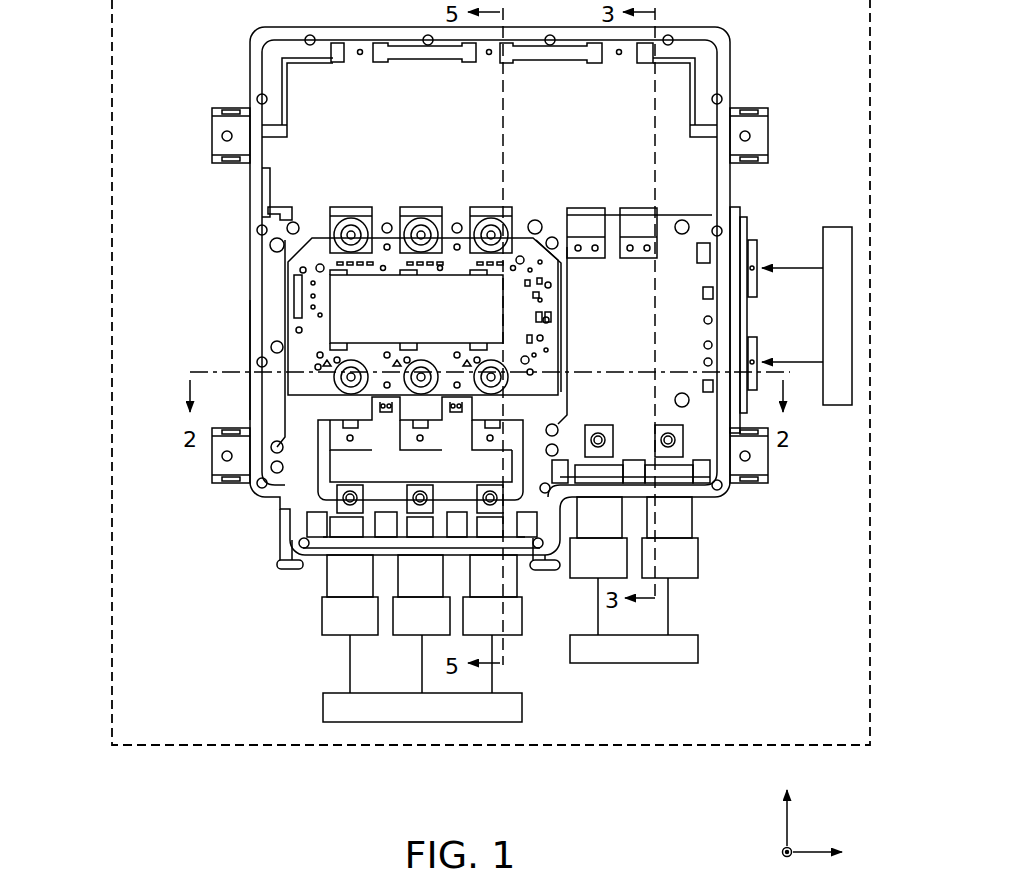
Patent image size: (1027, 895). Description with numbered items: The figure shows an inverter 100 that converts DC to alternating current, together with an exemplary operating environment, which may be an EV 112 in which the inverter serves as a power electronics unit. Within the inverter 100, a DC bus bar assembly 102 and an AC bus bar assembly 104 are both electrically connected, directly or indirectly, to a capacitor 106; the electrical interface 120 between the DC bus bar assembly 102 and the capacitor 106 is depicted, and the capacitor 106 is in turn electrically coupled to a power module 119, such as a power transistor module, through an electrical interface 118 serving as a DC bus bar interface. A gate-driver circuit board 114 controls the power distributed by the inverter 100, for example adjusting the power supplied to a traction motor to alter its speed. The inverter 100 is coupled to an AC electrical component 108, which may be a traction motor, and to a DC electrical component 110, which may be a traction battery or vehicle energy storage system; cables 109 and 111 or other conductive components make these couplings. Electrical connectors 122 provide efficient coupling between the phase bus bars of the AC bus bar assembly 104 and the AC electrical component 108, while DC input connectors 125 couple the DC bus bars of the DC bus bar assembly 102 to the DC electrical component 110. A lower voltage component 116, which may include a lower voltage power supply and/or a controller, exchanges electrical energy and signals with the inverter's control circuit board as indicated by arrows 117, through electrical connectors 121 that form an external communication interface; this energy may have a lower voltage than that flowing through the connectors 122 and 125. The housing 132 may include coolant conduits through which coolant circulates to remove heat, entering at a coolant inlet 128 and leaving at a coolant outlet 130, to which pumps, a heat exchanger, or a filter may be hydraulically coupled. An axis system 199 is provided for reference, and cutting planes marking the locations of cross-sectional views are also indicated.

The inverter 100 is at (188, 78).
The DC bus bar assembly 102 is at (697, 250).
The AC bus bar assembly 104 is at (310, 480).
The capacitor 106 is at (272, 82).
The AC electrical component 108 is at (323, 710).
The cable 109 is at (350, 665).
The DC electrical component 110 is at (625, 665).
The cable 111 is at (672, 600).
The EV 112 is at (110, 22).
The gate-driver circuit board 114 is at (278, 304).
The lower voltage component 116 is at (852, 258).
The arrows 117 is at (795, 268).
The electrical interface 118 is at (322, 228).
The power module 119 is at (266, 248).
The electrical interface 120 is at (580, 208).
The electrical connectors 121 is at (752, 240).
The electrical connectors 122 is at (305, 620).
The DC input connectors 125 is at (709, 550).
The coolant inlet 128 is at (548, 580).
The coolant outlet 130 is at (297, 567).
The housing 132 is at (252, 315).
The axis system 199 is at (805, 833).